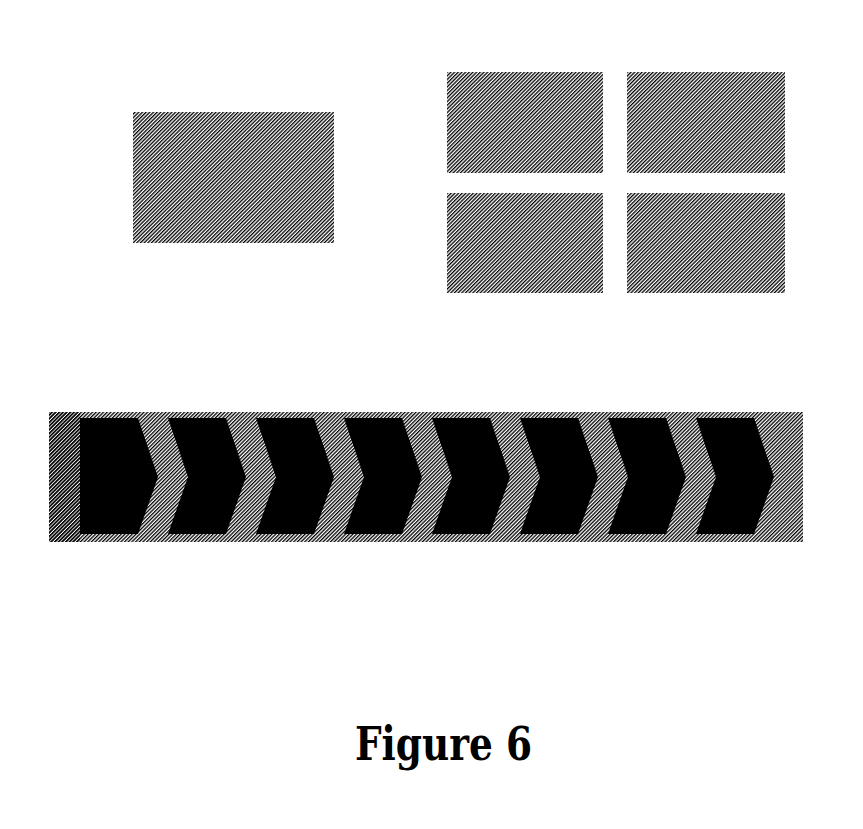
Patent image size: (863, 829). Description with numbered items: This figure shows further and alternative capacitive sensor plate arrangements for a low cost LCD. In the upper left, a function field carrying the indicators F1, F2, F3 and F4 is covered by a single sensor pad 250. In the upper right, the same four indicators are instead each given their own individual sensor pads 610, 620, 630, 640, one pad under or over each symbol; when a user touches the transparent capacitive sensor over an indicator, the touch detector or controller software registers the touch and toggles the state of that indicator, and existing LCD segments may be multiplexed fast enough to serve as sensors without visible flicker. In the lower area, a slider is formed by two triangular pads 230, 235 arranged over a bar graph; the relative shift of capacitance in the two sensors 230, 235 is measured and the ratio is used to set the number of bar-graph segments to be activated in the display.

The single sensor pad 250 is at (216, 125).
The individual sensor pad 610 is at (537, 88).
The individual sensor pad 620 is at (650, 87).
The individual sensor pad 630 is at (498, 278).
The individual sensor pad 640 is at (660, 278).
The triangular pad 230 is at (782, 442).
The triangular pad 235 is at (61, 425).